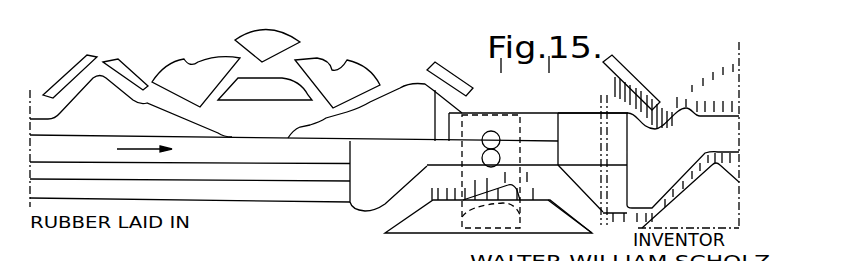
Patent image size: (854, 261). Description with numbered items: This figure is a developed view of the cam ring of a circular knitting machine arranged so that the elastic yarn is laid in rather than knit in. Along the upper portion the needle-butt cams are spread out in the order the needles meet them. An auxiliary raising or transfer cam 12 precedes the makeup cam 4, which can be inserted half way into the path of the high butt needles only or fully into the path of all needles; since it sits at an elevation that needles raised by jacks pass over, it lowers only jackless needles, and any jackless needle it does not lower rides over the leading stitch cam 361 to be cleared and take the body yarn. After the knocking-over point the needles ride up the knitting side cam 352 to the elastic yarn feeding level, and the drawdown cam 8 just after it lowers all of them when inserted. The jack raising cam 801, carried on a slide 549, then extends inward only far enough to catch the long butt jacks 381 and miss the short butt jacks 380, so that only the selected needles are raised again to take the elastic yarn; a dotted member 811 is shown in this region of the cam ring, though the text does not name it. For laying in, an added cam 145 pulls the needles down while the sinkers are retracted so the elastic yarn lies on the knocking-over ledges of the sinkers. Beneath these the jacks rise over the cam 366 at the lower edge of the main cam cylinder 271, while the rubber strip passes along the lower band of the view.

The auxiliary raising or transfer cam 12 is at (70, 78).
The makeup cam 4 is at (130, 78).
The leading stitch cam 361 is at (200, 78).
The knitting side cam 352 is at (403, 107).
The drawdown cam 8 is at (448, 77).
The pressing rollers 811 is at (495, 134).
The slide 549 is at (463, 180).
The jack raising cam 801 is at (508, 185).
The needle drawdown cam for laying in 145 is at (628, 80).
The main cam cylinder 271 is at (733, 132).
The short butt jacks 380 is at (731, 151).
The long butt jacks 381 is at (734, 159).
The jack cam 366 is at (722, 200).